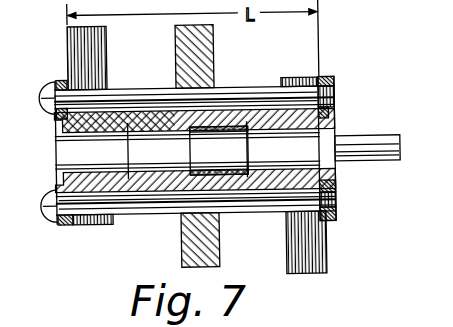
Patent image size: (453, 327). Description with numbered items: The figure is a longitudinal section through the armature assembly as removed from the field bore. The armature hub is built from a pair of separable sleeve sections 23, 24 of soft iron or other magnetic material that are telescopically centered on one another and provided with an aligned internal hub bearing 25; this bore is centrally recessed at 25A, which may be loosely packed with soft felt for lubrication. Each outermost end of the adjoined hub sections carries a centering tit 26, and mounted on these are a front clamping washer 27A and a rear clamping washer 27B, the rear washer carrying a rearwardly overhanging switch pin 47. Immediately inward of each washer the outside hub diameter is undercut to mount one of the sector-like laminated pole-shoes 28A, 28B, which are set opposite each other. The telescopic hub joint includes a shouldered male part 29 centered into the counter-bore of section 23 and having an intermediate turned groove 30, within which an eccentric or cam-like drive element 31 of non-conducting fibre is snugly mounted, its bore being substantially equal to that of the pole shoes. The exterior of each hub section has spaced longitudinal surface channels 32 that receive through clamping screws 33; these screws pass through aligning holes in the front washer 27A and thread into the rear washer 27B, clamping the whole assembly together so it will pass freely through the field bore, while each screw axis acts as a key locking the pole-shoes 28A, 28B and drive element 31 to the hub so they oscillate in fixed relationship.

The sleeve section 23 is at (88, 192).
The sleeve section 24 is at (257, 182).
The internal hub bearing 25 is at (55, 170).
The central recess 25A is at (205, 168).
The centering tit 26 is at (58, 124).
The front clamping washer 27A is at (66, 82).
The rear clamping washer 27B is at (334, 78).
The laminated pole-shoe 28A is at (101, 36).
The laminated pole-shoe 28B is at (313, 262).
The shouldered male part 29 is at (157, 185).
The intermediate turned groove 30 is at (190, 205).
The eccentric drive element 31 is at (207, 60).
The longitudinal surface channel 32 is at (128, 87).
The clamping screw 33 is at (263, 87).
The switch pin 47 is at (371, 138).